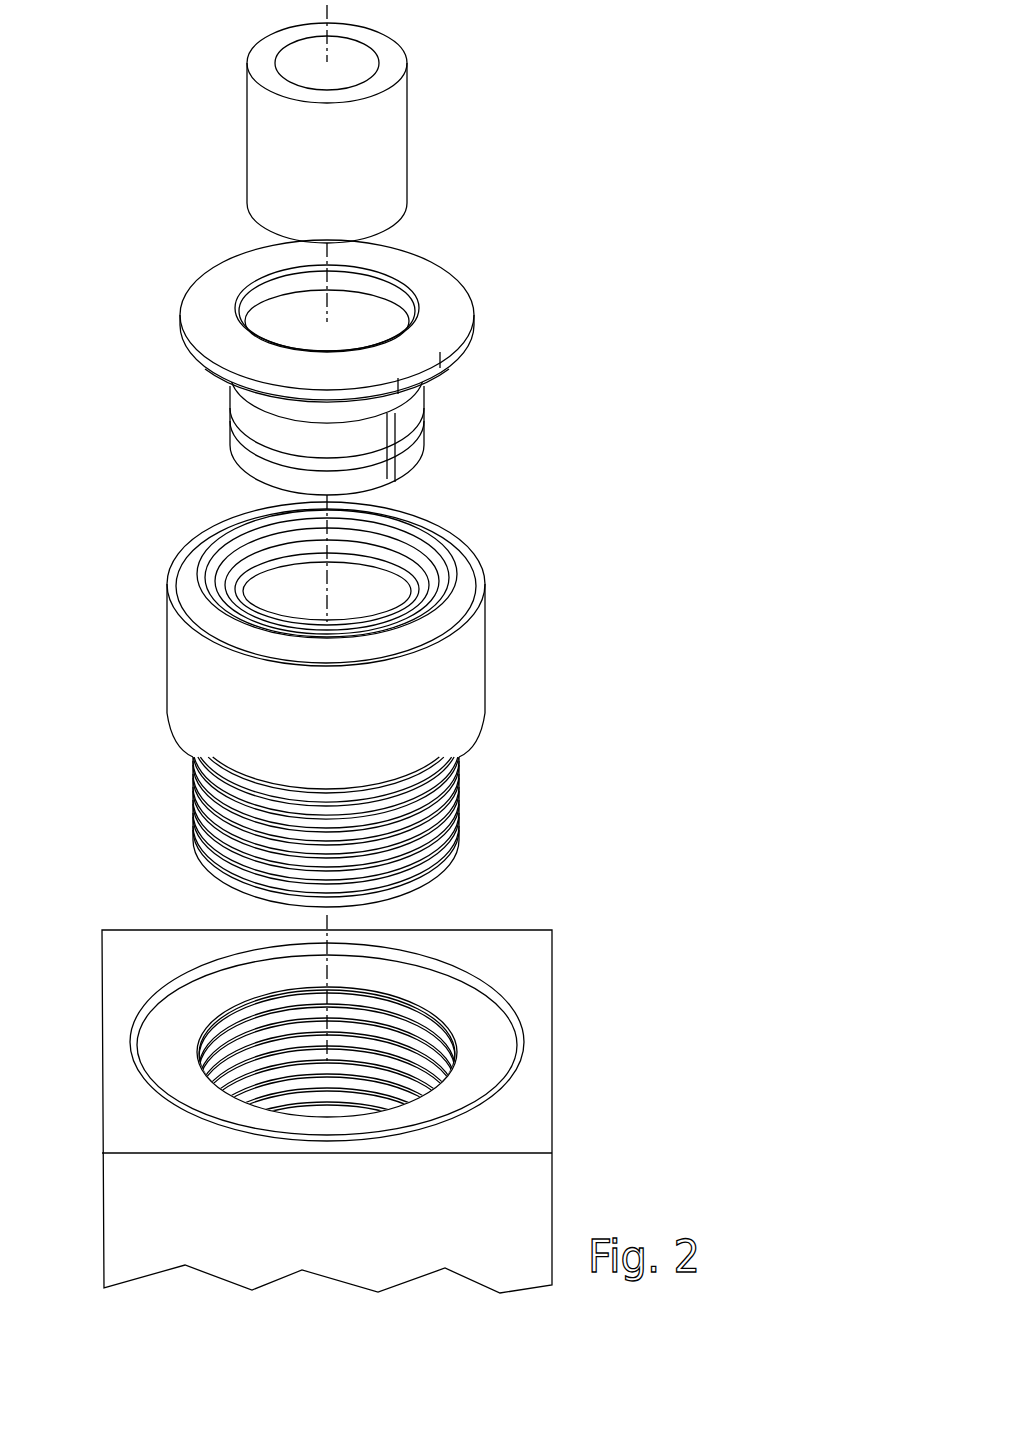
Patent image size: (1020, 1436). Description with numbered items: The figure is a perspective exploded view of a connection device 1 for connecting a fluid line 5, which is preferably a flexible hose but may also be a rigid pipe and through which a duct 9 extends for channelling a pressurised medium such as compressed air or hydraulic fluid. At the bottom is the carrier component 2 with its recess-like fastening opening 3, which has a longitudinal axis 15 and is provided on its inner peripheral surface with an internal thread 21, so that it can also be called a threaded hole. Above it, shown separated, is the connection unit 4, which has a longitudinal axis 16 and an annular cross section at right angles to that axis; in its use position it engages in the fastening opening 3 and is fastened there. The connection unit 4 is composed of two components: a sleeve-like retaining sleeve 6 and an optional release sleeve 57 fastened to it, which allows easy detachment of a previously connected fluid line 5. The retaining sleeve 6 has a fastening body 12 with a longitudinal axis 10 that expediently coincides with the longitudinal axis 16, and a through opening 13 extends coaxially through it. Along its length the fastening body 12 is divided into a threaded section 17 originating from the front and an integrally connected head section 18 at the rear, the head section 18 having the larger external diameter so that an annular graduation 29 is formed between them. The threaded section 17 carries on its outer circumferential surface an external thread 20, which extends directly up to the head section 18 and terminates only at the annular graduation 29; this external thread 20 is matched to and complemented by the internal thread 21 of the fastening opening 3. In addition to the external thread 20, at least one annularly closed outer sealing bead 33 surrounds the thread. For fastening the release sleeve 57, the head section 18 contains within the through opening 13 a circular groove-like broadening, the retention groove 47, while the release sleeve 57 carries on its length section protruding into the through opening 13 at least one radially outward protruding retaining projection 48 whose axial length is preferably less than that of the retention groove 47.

The connection device 1 is at (560, 197).
The carrier component 2 is at (371, 1111).
The fastening opening 3 is at (360, 1098).
The connection unit 4 is at (556, 238).
The fluid line 5 is at (357, 133).
The retaining sleeve 6 is at (318, 692).
The duct 9 is at (358, 66).
The longitudinal axis 10 is at (345, 553).
The fastening body 12 is at (482, 652).
The through opening 13 is at (393, 570).
The longitudinal axis 15 is at (330, 975).
The longitudinal axis 16 is at (338, 272).
The threaded section 17 is at (343, 832).
The head section 18 is at (462, 692).
The external thread 20 is at (378, 827).
The internal thread 21 is at (407, 1024).
The annular graduation 29 is at (183, 762).
The outer sealing bead 33 is at (435, 808).
The retention groove 47 is at (272, 598).
The retaining projection 48 is at (398, 462).
The release sleeve 57 is at (276, 356).